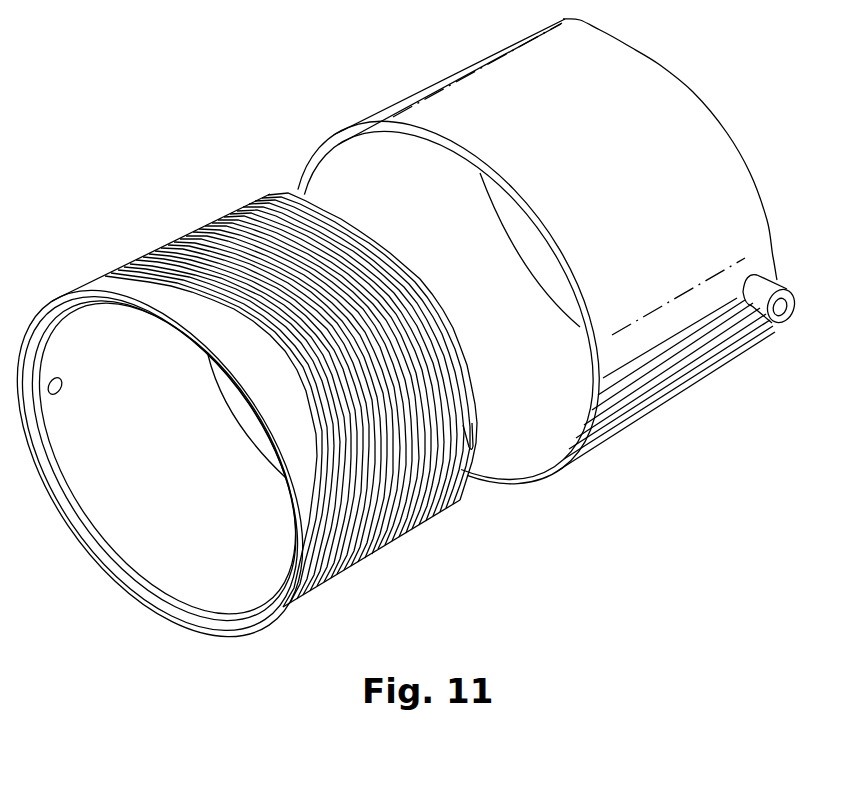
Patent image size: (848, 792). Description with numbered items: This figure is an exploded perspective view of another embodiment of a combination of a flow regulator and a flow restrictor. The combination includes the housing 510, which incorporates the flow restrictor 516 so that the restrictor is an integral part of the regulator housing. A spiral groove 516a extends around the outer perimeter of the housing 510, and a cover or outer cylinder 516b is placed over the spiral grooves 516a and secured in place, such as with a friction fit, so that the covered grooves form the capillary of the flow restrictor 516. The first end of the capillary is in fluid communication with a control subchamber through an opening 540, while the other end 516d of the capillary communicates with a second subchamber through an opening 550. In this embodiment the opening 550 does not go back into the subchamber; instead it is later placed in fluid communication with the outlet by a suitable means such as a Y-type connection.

The housing 510 is at (291, 599).
The flow restrictor 516 is at (293, 156).
The spiral groove 516a is at (182, 290).
The body portion 516b is at (682, 132).
The other end of the capillary 516d is at (470, 486).
The opening 540 is at (61, 391).
The opening 550 is at (783, 326).